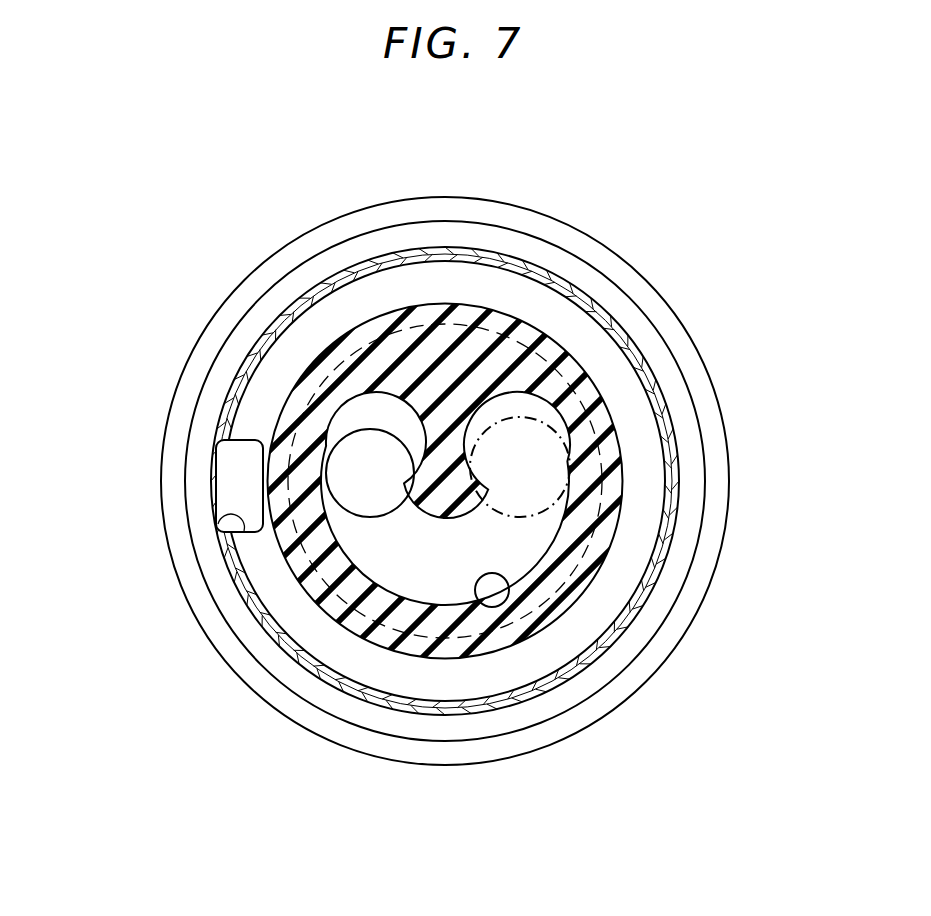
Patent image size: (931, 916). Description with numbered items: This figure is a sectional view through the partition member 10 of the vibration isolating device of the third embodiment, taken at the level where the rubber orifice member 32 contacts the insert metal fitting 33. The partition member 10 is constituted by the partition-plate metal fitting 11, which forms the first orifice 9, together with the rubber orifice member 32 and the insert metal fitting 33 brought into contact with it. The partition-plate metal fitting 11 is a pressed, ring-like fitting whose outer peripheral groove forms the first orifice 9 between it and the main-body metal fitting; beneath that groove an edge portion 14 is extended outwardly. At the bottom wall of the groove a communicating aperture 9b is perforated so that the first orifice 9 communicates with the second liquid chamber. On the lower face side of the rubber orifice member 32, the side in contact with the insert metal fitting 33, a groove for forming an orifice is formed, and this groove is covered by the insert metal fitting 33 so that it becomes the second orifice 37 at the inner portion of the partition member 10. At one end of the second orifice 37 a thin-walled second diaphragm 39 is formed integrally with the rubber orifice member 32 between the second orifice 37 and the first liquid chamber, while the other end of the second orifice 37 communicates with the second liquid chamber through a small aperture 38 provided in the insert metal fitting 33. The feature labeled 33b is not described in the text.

The partition member 10 is at (618, 240).
The edge portion 14 is at (695, 382).
The partition-plate metal fitting 11 is at (678, 433).
The first orifice 9 is at (307, 296).
The communicating aperture 9b is at (216, 488).
The insert metal fitting 33 is at (393, 676).
The rubber orifice member 32 is at (558, 345).
The groove 33b is at (220, 521).
The small aperture 38 is at (353, 508).
The second diaphragm 39 is at (557, 506).
The second orifice 37 is at (511, 593).